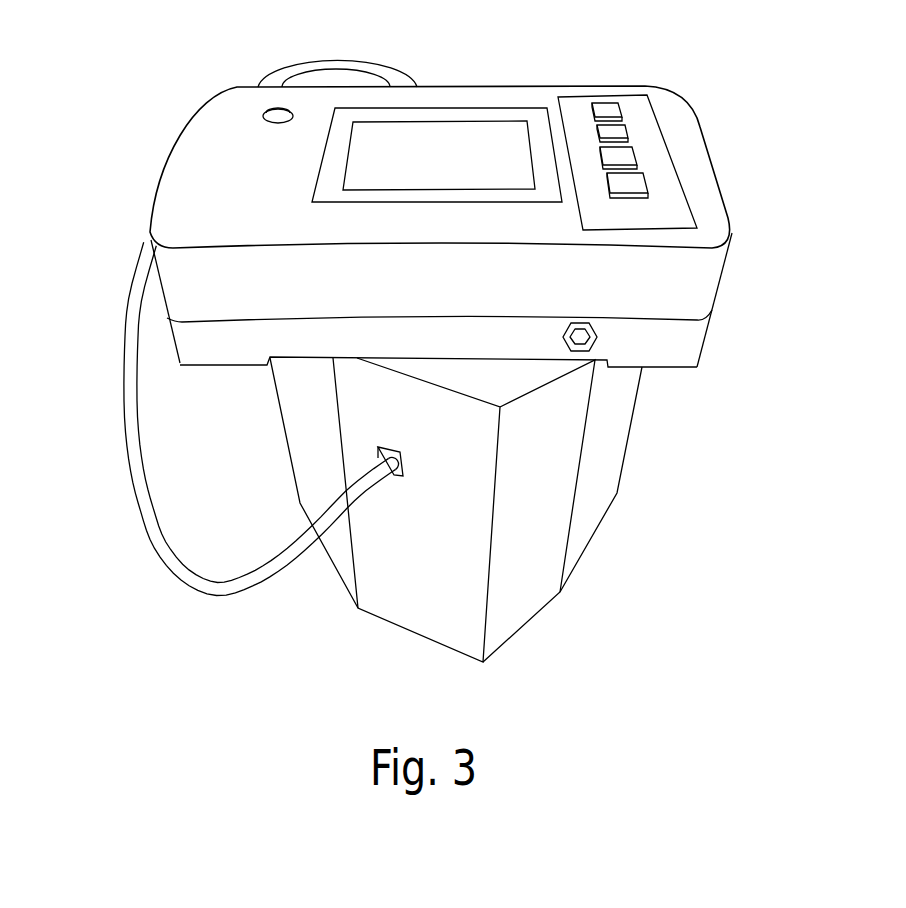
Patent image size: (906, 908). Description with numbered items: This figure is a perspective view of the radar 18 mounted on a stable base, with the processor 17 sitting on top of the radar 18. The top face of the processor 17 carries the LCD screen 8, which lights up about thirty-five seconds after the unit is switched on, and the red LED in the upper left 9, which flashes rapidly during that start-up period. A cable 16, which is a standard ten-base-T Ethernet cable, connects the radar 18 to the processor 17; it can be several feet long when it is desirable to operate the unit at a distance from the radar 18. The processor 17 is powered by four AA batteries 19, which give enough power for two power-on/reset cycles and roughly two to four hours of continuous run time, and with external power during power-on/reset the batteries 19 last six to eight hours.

The LCD screen 8 is at (463, 145).
The red LED in the upper left 9 is at (258, 108).
The cable 16 is at (123, 382).
The processor 17 is at (697, 127).
The radar 18 is at (562, 593).
The AA batteries 19 is at (197, 378).